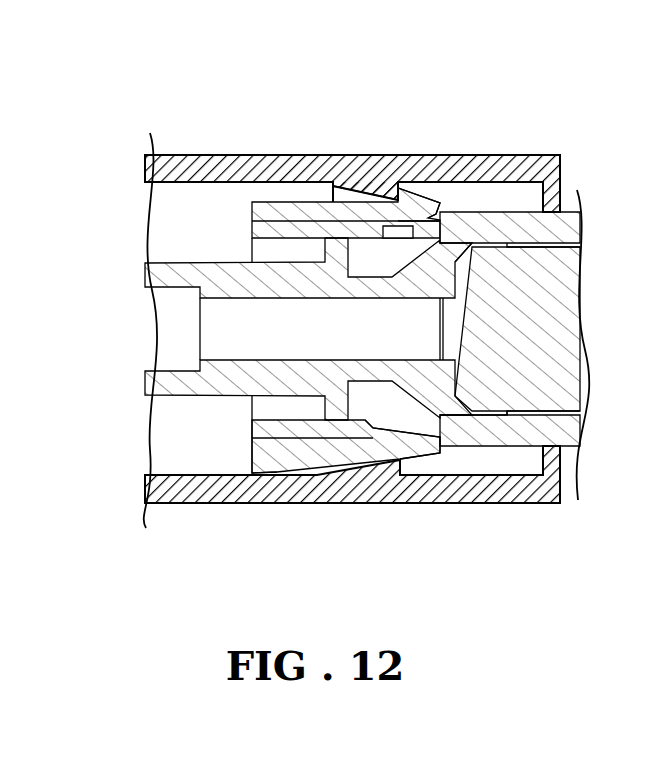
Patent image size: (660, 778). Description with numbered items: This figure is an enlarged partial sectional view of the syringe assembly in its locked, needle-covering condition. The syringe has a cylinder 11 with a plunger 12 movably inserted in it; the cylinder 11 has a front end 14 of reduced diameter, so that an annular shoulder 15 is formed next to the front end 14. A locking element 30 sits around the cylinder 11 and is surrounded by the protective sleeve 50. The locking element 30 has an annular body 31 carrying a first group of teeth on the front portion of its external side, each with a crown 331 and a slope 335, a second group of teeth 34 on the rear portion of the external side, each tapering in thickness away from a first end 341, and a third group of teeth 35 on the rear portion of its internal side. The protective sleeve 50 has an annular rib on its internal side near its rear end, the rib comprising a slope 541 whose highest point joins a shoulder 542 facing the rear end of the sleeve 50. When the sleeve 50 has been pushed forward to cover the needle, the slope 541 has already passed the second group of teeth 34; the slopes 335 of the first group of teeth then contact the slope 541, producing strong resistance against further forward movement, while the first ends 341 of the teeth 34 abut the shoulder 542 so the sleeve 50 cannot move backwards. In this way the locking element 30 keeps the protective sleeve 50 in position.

The cylinder 11 is at (565, 228).
The plunger 12 is at (558, 370).
The front end 14 is at (252, 230).
The annular shoulder 15 is at (478, 450).
The locking element 30 is at (365, 308).
The annular body 31 is at (287, 203).
The second group of teeth 34 is at (440, 196).
The third group of teeth 35 is at (387, 232).
The protective sleeve 50 is at (557, 155).
The crown 331 is at (280, 471).
The slope 335 is at (362, 458).
The first end 341 is at (398, 232).
The slope 541 is at (365, 190).
The shoulder 542 is at (426, 192).